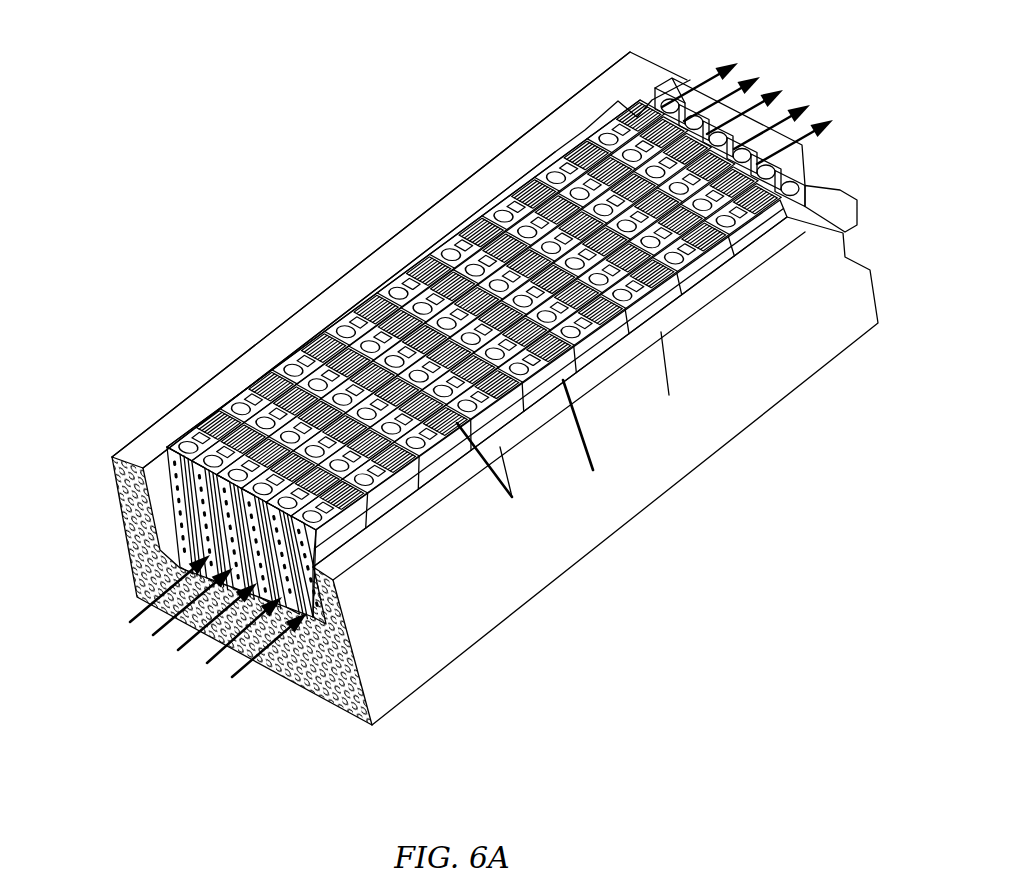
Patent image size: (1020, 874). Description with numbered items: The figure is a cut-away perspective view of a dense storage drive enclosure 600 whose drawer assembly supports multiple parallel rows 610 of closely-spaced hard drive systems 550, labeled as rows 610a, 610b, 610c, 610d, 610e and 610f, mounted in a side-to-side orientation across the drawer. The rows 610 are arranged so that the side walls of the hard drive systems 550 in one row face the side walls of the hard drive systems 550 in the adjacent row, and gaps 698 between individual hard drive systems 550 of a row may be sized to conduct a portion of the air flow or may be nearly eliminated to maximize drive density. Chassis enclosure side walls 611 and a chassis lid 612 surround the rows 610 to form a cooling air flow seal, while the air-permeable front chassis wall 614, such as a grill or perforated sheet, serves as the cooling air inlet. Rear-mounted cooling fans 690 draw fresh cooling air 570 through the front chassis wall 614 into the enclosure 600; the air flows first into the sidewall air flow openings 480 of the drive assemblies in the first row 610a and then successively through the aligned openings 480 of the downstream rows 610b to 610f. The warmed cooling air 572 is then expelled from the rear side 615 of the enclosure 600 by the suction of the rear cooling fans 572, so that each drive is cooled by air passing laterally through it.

The enclosure 600 is at (186, 210).
The rows 610 is at (497, 603).
The first row 610a is at (435, 495).
The second row 610b is at (515, 453).
The row 610c is at (595, 400).
The row 610d is at (675, 345).
The row 610e is at (730, 290).
The last row 610f is at (810, 238).
The chassis enclosure side walls 611 is at (158, 418).
The chassis lid 612 is at (208, 378).
The front chassis wall 614 is at (320, 693).
The rear side 615 is at (858, 265).
The hard drive systems 550 is at (403, 333).
The gaps 698 is at (310, 390).
The sidewall air flow openings 480 is at (192, 512).
The cooling air 570 is at (235, 690).
The rear cooling fans 572 is at (737, 53).
The cooling fans 690 is at (692, 86).